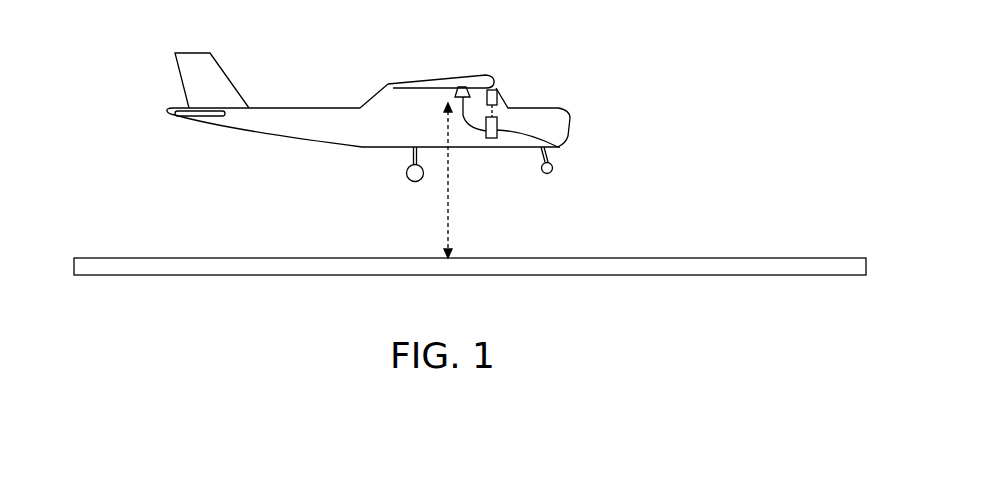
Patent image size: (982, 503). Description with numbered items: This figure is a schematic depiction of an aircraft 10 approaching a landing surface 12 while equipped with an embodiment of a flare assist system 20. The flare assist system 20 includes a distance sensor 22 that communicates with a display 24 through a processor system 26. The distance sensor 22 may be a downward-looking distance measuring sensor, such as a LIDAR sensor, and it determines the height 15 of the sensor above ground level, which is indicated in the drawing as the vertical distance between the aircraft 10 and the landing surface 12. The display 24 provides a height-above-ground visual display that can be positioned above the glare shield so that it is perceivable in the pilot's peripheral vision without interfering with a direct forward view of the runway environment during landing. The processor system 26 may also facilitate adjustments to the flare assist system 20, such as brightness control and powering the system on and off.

The aircraft 10 is at (322, 108).
The landing surface 12 is at (122, 258).
The height 15 is at (446, 212).
The flare assist system 20 is at (507, 51).
The distance sensor 22 is at (466, 86).
The display 24 is at (504, 88).
The processor system 26 is at (558, 146).